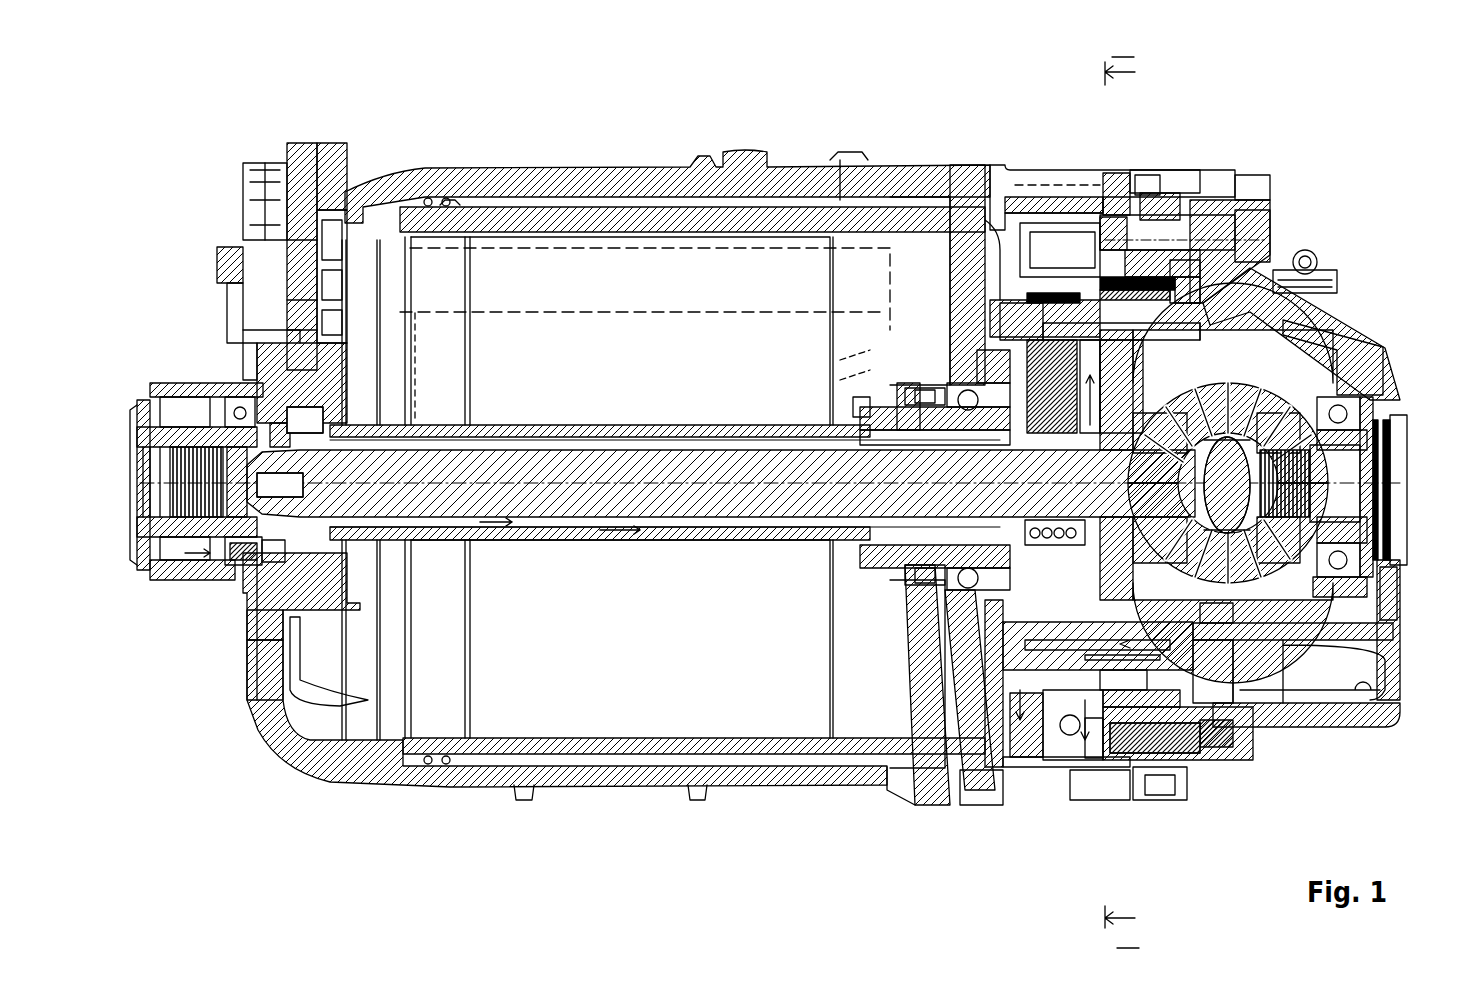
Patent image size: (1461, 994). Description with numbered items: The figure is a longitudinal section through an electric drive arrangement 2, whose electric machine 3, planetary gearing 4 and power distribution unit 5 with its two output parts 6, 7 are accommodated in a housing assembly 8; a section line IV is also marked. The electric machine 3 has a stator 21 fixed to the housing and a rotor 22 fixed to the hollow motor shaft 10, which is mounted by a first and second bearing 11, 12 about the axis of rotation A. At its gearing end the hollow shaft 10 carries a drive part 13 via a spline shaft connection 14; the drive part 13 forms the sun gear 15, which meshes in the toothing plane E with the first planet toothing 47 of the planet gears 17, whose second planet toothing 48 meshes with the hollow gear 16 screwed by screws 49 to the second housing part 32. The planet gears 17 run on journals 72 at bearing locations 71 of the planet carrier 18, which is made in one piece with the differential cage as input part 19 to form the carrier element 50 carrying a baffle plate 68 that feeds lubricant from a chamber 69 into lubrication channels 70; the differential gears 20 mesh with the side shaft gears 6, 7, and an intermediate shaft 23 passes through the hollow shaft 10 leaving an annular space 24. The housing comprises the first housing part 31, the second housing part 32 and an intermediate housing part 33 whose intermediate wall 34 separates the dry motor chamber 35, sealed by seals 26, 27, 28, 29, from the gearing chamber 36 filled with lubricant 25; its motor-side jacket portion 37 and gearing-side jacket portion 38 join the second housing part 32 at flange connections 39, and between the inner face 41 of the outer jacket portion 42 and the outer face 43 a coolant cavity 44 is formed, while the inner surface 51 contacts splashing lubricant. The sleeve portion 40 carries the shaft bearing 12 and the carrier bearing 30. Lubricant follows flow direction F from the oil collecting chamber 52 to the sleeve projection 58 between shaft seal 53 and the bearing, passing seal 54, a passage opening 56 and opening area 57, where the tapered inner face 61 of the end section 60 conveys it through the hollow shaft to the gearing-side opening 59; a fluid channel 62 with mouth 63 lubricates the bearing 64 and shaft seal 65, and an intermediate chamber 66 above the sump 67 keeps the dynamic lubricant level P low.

The electric drive arrangement 2 is at (668, 95).
The electric machine 3 is at (556, 215).
The planetary gearing 4 is at (990, 700).
The power distribution unit 5 is at (1337, 272).
The output part 6 is at (1245, 240).
The output part 7 is at (1270, 400).
The housing assembly 8 is at (900, 197).
The motor shaft 10 is at (780, 420).
The first bearing 11 is at (262, 345).
The second bearing 12 is at (948, 197).
The drive part 13 is at (1005, 300).
The shaft connection 14 is at (873, 380).
The sun gear 15 is at (1060, 225).
The hollow gear 16 is at (1155, 180).
The planet gears 17 is at (1088, 760).
The planet carrier 18 is at (1226, 188).
The input part 19 is at (1308, 250).
The differential gears 20 is at (1280, 670).
The stator 21 is at (585, 255).
The rotor 22 is at (530, 400).
The intermediate shaft 23 is at (648, 520).
The annular space 24 is at (600, 525).
The lubricant 25 is at (1022, 770).
The seal 26 is at (436, 200).
The seal 27 is at (866, 197).
The seal 28 is at (262, 395).
The seal 29 is at (905, 395).
The bearing 30 is at (945, 600).
The first housing part 31 is at (392, 168).
The second housing part 32 is at (1245, 300).
The intermediate housing part 33 is at (935, 195).
The intermediate wall 34 is at (975, 230).
The motor chamber 35 is at (358, 725).
The gearing chamber 36 is at (960, 790).
The jacket portion 37 is at (718, 215).
The jacket portion 38 is at (1055, 260).
The flange connections 39 is at (1120, 170).
The sleeve portion 40 is at (920, 600).
The inner face 41 is at (600, 200).
The outer jacket portion 42 is at (638, 190).
The outer face 43 is at (690, 200).
The cavity 44 is at (748, 215).
The first planet toothing 47 is at (1055, 765).
The second planet toothing 48 is at (1150, 762).
The screws 49 is at (1185, 800).
The carrier element 50 is at (1192, 285).
The inner surface 51 is at (1080, 215).
The oil collecting chamber 52 is at (270, 560).
The shaft seal 53 is at (155, 570).
The seal 54 is at (270, 560).
The passage opening 56 is at (218, 560).
The opening area 57 is at (220, 560).
The sleeve projection 58 is at (190, 385).
The gearing-side opening 59 is at (1080, 540).
The end section 60 is at (265, 600).
The tapered inner face 61 is at (300, 600).
The fluid channel 62 is at (1365, 325).
The mouth 63 is at (1360, 412).
The bearing 64 is at (1395, 420).
The shaft seal 65 is at (1368, 400).
The intermediate chamber 66 is at (1340, 690).
The sump 67 is at (1075, 790).
The baffle plate 68 is at (1225, 700).
The chamber 69 is at (1315, 680).
The lubrication channels 70 is at (1240, 740).
The bearing locations 71 is at (1145, 805).
The journals 72 is at (1205, 760).
The axis of rotation A is at (760, 490).
The toothing plane E is at (915, 560).
The flow direction F is at (595, 438).
The dynamic lubricant level P is at (1340, 680).
The section line IV is at (1124, 491).